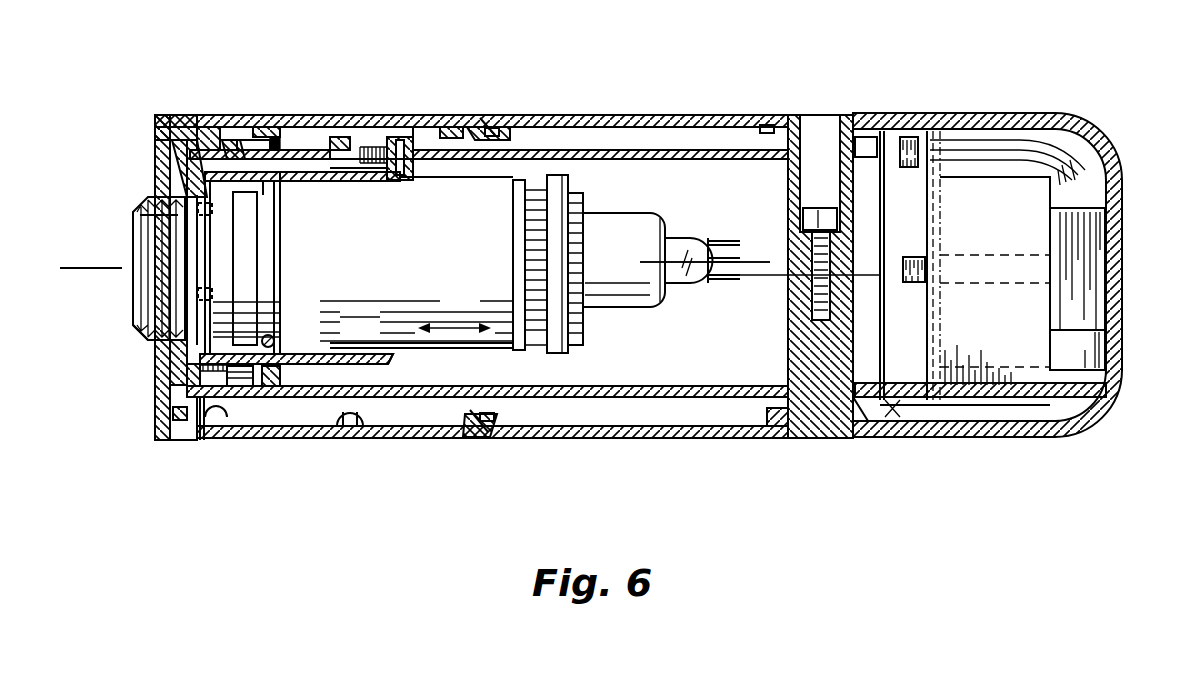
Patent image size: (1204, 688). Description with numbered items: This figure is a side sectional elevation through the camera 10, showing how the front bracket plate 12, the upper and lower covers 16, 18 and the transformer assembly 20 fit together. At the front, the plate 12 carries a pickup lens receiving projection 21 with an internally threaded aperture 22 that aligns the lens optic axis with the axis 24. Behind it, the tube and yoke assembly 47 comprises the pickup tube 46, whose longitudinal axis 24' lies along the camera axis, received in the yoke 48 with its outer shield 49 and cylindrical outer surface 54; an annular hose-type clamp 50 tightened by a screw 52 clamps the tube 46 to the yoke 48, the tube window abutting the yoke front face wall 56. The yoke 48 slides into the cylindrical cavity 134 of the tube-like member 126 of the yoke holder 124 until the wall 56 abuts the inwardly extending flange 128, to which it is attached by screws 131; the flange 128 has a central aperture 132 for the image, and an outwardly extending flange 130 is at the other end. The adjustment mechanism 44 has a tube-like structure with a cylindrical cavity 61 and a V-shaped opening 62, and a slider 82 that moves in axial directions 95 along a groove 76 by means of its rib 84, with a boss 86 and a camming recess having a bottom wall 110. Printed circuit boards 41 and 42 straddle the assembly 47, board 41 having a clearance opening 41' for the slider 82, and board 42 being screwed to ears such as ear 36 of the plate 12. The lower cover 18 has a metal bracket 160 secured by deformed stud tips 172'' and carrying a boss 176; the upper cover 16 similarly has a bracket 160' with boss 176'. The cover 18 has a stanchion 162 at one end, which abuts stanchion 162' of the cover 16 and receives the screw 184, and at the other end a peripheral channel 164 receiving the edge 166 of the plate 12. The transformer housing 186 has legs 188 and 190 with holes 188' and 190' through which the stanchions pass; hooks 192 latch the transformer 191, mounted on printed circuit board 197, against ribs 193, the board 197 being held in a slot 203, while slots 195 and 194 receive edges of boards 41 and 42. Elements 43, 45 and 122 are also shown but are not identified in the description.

The camera 10 is at (697, 90).
The front bracket plate 12 is at (177, 374).
The upper cover 16 is at (630, 114).
The lower cover 18 is at (563, 438).
The transformer assembly 20 is at (1136, 255).
The pickup lens receiving projection 21 is at (137, 332).
The internally threaded aperture 22 is at (133, 297).
The axis 24 is at (470, 286).
The longitudinal axis of pickup tube 24' is at (695, 242).
The cantilevered apertured ear 36 is at (173, 415).
The printed circuit board 41 is at (489, 174).
The clearance opening 41' is at (414, 110).
The printed circuit board 42 is at (687, 385).
The front insulator block 43 is at (213, 126).
The adjustment mechanism 44 is at (318, 116).
The spring contact 45 is at (222, 378).
The pickup tube 46 is at (663, 225).
The tube and yoke assembly 47 is at (590, 207).
The yoke 48 is at (570, 349).
The outer shield 49 is at (511, 351).
The annular hose-type clamp 50 is at (279, 307).
The screw 52 is at (279, 341).
The circular cylindrical outer surface 54 is at (467, 350).
The yoke front face wall 56 is at (212, 238).
The circular cylindrical cavity 61 is at (187, 351).
The axially extending V-shaped opening 62 is at (260, 384).
The axial extending groove 76 is at (178, 115).
The slider 82 is at (279, 138).
The rib 84 is at (237, 157).
The boss 86 is at (374, 175).
The axial directions 95 is at (453, 327).
The bottom wall 110 is at (335, 181).
The switch block 122 is at (410, 181).
The yoke holder 124 is at (268, 181).
The circular cylindrical tube-like member 126 is at (393, 358).
The radially inwardly extending flange 128 is at (193, 192).
The radially outwardly extending flange 130 is at (387, 128).
The screws 131 is at (139, 217).
The central aperture 132 is at (208, 278).
The cylindrical cavity 134 is at (358, 346).
The metal bracket 160 is at (345, 445).
The upper cover bracket 160' is at (510, 107).
The cylindrical apertured stanchion 162 is at (797, 276).
The stanchion 162' is at (766, 276).
The peripheral channel 164 is at (183, 440).
The edge 166 is at (164, 430).
The deformed stud tips 172'' is at (527, 275).
The boss 176 is at (455, 444).
The boss 176' is at (441, 106).
The screw 184 is at (823, 207).
The transformer housing 186 is at (1108, 132).
The leg 188 is at (737, 134).
The hole 188' is at (791, 153).
The leg 190 is at (749, 411).
The hole 190' is at (843, 433).
The transformer 191 is at (1001, 178).
The cantilevered spaced latching hooks 192 is at (914, 257).
The spaced ribs 193 is at (1086, 209).
The coplanar slots 194 is at (913, 417).
The coplanar slots 195 is at (914, 160).
The printed circuit board 197 is at (1017, 370).
The coplanar slot 203 is at (978, 354).